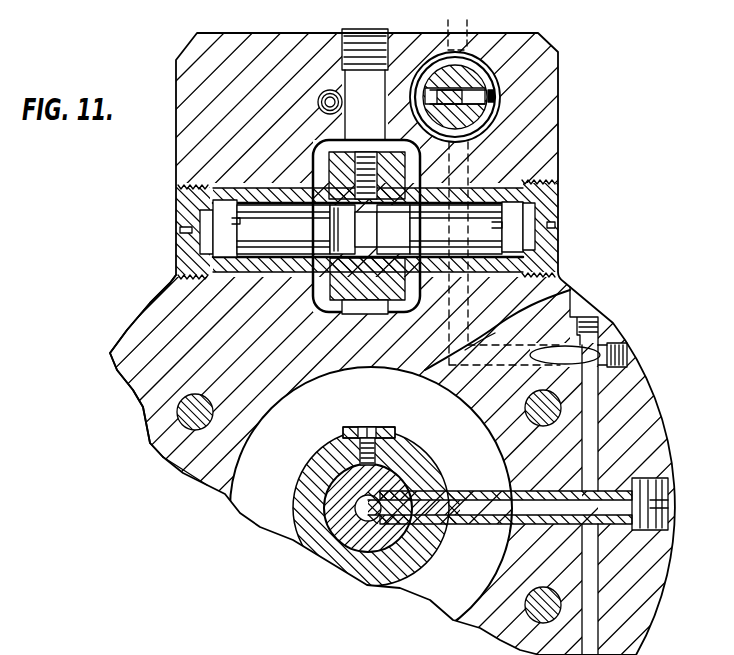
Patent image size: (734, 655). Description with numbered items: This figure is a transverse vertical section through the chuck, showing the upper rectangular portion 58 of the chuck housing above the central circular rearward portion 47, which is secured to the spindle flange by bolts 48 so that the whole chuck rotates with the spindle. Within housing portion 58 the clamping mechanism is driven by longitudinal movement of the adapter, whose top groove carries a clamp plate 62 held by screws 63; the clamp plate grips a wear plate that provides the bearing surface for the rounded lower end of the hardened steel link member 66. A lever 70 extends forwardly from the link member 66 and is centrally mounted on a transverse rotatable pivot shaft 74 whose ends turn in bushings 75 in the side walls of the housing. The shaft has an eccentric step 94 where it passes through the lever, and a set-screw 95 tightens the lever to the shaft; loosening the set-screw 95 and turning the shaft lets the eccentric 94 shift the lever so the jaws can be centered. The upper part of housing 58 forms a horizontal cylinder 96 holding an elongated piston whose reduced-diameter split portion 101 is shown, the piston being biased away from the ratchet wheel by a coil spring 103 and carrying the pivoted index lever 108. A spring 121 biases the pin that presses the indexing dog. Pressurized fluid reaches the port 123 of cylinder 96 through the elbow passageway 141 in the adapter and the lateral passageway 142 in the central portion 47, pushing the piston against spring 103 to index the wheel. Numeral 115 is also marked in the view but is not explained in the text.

The upper rectangular portion of the chuck housing 58 is at (293, 33).
The central circular rearward portion of the chuck housing 47 is at (172, 280).
The longitudinally split portion of reduced diameter 101 is at (462, 48).
The horizontal cylinder 96 is at (498, 78).
The coil spring 103 is at (500, 97).
The index lever 108 is at (440, 100).
The spring 121 is at (342, 103).
The set-screw 95 is at (367, 152).
The port 123 is at (470, 135).
The bushings 75 is at (180, 188).
The pivot shaft 74 is at (272, 232).
The eccentric step 94 is at (357, 212).
The lever 70 is at (384, 272).
The link member 66 is at (363, 372).
The screws 63 is at (368, 427).
The clamp plate 62 is at (393, 428).
The bolts 48 is at (183, 410).
The lateral passageway 142 is at (492, 507).
The elbow passageway 141 is at (356, 506).
The cover 115 is at (238, 644).